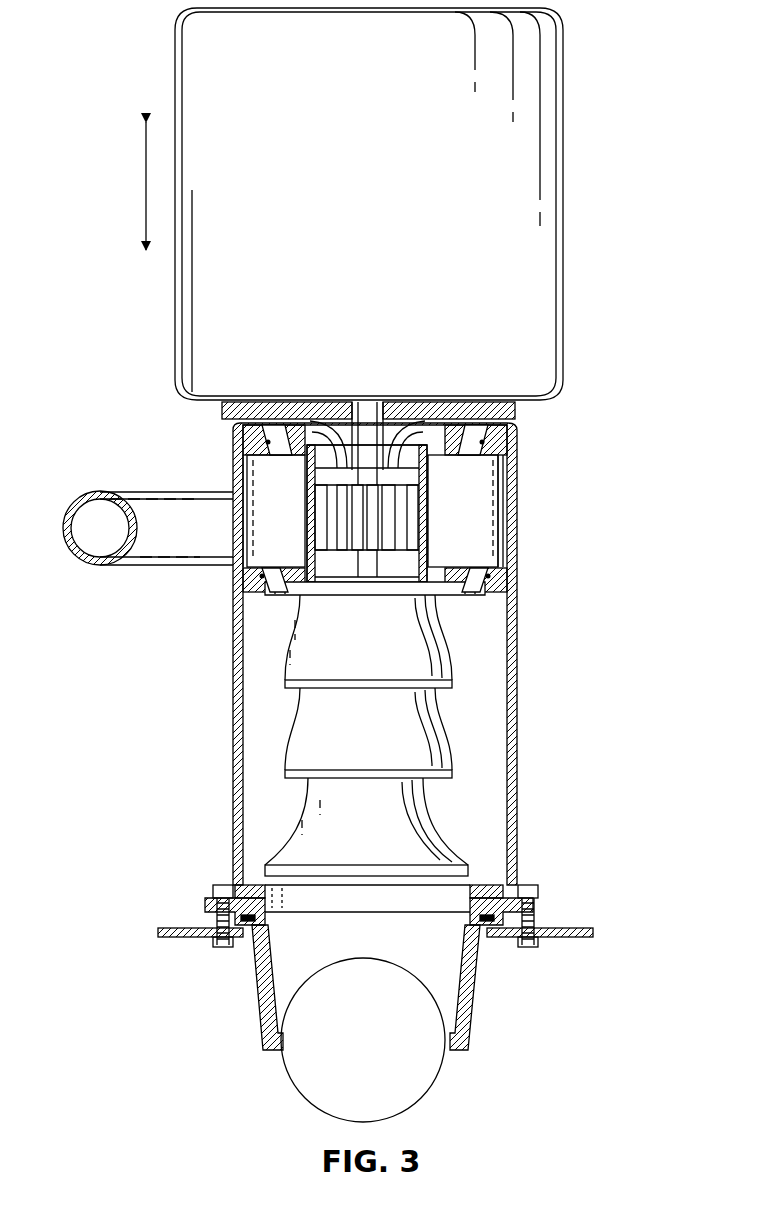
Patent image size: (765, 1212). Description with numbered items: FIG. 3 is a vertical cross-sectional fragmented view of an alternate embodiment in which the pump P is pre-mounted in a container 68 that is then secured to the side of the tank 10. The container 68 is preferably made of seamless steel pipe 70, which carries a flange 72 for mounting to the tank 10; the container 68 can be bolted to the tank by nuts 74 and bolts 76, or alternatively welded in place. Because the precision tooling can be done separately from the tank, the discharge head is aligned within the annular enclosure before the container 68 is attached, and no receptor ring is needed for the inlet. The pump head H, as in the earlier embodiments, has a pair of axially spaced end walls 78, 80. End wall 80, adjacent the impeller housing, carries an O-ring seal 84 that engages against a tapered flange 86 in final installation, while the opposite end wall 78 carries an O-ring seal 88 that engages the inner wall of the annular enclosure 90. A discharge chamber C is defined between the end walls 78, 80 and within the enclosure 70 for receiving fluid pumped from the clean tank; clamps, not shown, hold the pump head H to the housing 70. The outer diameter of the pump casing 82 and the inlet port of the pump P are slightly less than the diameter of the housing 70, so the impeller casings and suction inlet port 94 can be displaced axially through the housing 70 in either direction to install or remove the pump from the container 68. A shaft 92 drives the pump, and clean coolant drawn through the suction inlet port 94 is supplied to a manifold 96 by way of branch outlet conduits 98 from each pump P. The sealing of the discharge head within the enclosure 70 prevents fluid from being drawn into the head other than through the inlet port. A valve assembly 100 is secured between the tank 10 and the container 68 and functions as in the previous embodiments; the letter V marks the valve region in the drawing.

The tank 10 is at (170, 926).
The container 68 is at (527, 665).
The seamless steel pipe 70 is at (236, 639).
The flange 72 is at (240, 885).
The nuts 74 is at (220, 893).
The bolts 76 is at (233, 940).
The end wall 78 is at (463, 443).
The end wall 80 is at (460, 567).
The pump casing 82 is at (437, 670).
The O-ring seal 84 is at (244, 575).
The tapered flange 86 is at (253, 595).
The O-ring seal 88 is at (254, 436).
The annular enclosure 90 is at (235, 415).
The shaft 92 is at (403, 508).
The suction inlet port 94 is at (472, 935).
The manifold 96 is at (74, 553).
The branch outlet conduits 98 is at (158, 497).
The valve assembly 100 is at (407, 1088).
The discharge chamber C is at (517, 497).
The pump head H is at (352, 580).
The pump P is at (480, 800).
The valve V is at (363, 1044).